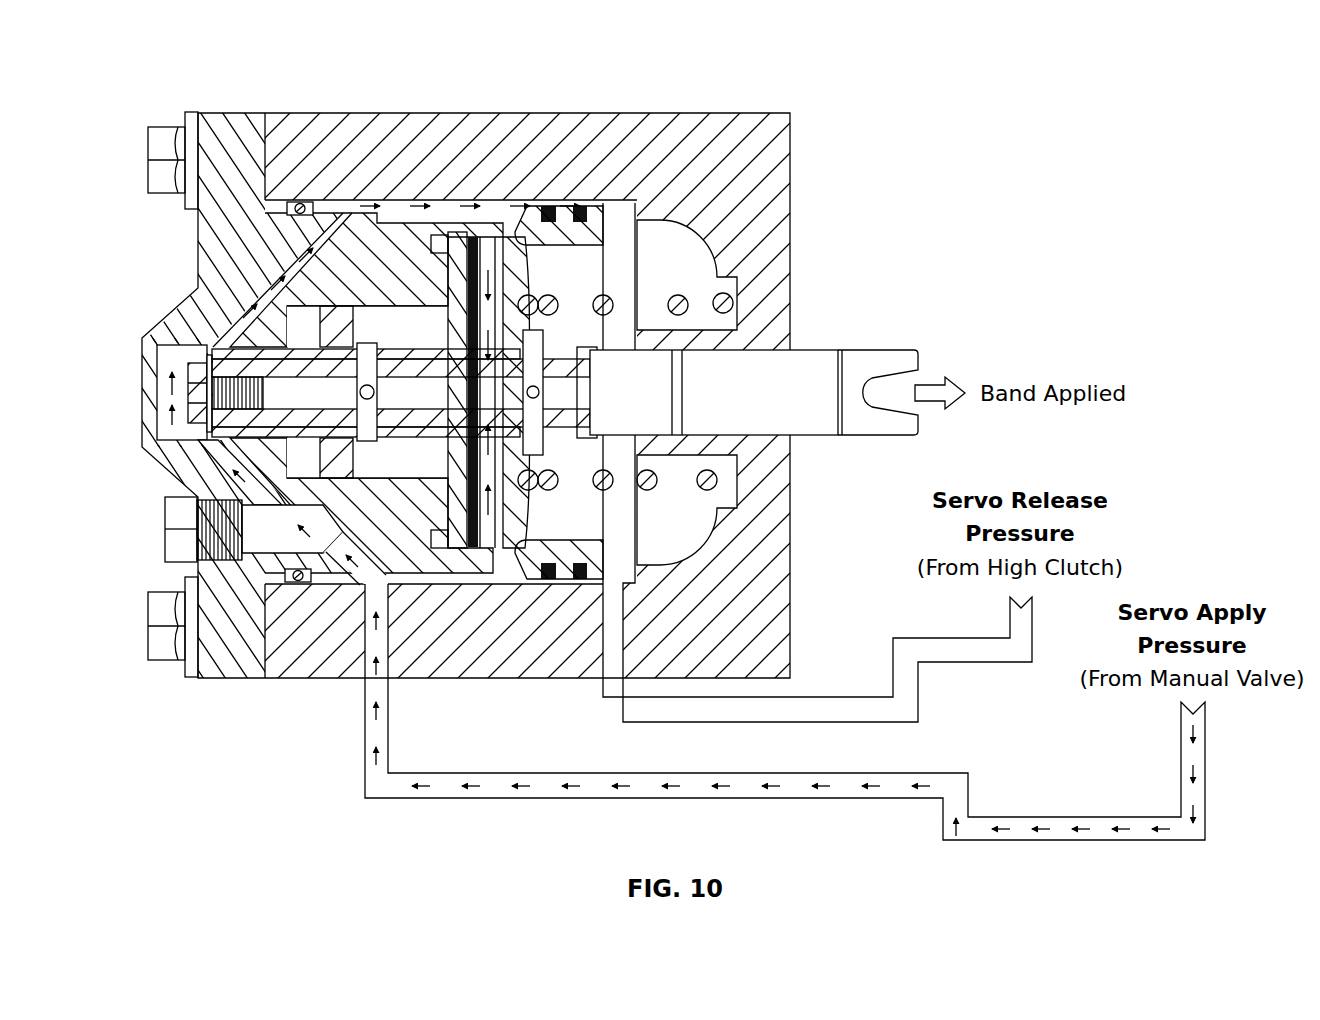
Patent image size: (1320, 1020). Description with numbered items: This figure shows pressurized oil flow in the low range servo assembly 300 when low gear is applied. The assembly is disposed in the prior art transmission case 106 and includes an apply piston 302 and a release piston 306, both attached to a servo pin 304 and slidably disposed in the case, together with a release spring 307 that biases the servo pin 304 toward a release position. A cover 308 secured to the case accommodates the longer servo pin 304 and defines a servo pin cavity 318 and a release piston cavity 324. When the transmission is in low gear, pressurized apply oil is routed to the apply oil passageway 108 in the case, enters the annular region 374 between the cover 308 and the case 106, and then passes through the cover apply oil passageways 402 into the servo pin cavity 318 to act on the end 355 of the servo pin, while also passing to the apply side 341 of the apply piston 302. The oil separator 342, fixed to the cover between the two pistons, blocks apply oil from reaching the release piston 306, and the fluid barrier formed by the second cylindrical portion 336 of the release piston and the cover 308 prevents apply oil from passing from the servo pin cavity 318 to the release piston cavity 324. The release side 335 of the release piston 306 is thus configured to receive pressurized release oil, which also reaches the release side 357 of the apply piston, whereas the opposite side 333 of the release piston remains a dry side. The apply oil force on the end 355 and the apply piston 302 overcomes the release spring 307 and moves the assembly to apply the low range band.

The transmission case 106 is at (358, 125).
The apply oil passageway 108 is at (385, 690).
The low range servo assembly 300 is at (692, 69).
The apply piston 302 is at (605, 203).
The servo pin 304 is at (820, 352).
The release piston 306 is at (341, 300).
The release spring 307 is at (712, 300).
The cover 308 is at (207, 240).
The servo pin cavity 318 is at (158, 378).
The release piston cavity 324 is at (407, 332).
The opposite side 333 is at (260, 298).
The release side 335 is at (345, 308).
The second cylindrical portion 336 is at (162, 332).
The apply side 341 is at (549, 205).
The oil separator 342 is at (462, 232).
The end 355 is at (190, 408).
The release side 357 is at (607, 215).
The annular region 374 is at (353, 560).
The cover apply oil passageway 402 is at (172, 517).